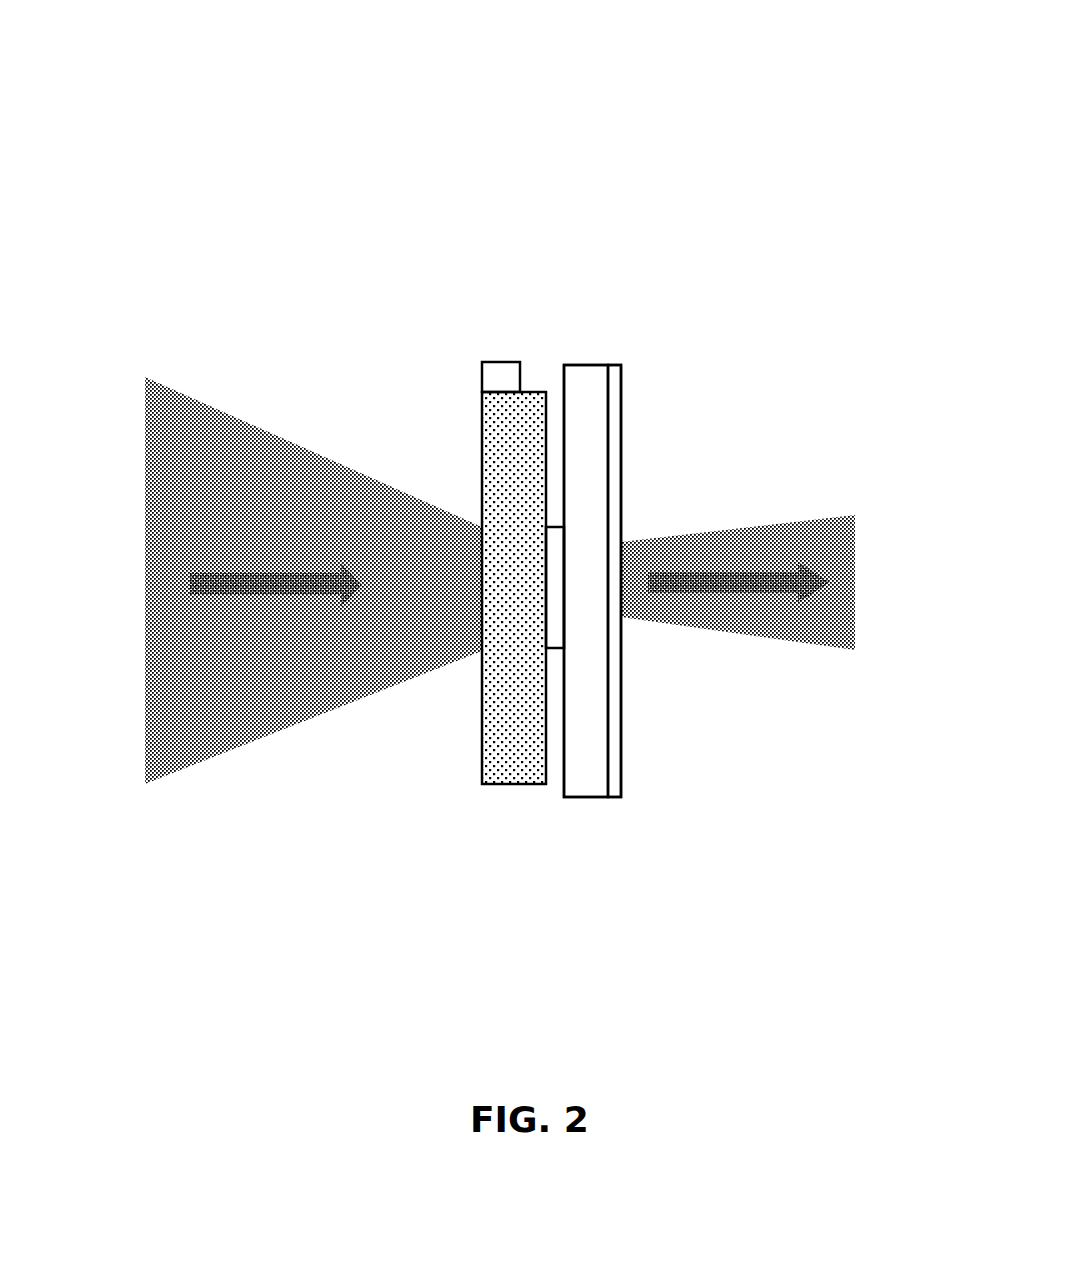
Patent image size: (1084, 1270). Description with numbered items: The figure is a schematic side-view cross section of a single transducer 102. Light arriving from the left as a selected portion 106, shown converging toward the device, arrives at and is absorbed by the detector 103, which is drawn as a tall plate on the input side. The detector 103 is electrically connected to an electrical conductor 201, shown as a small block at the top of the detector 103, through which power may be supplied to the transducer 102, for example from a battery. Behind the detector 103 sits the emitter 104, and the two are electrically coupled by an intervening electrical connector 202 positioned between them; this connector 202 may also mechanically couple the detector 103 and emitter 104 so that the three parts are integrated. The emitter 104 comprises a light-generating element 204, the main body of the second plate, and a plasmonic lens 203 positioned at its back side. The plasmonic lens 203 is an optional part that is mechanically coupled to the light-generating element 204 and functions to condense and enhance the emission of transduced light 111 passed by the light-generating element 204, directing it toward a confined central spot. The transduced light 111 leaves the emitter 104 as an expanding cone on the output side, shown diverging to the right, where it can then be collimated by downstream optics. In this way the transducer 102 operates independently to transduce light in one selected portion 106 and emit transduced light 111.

The transducer 102 is at (628, 473).
The detector 103 is at (546, 390).
The emitter 104 is at (660, 573).
The selected portion 106 is at (271, 434).
The transduced light 111 is at (828, 520).
The electrical conductor 201 is at (492, 362).
The electrical connector 202 is at (558, 637).
The plasmonic lens 203 is at (621, 713).
The light-generating element 204 is at (588, 797).